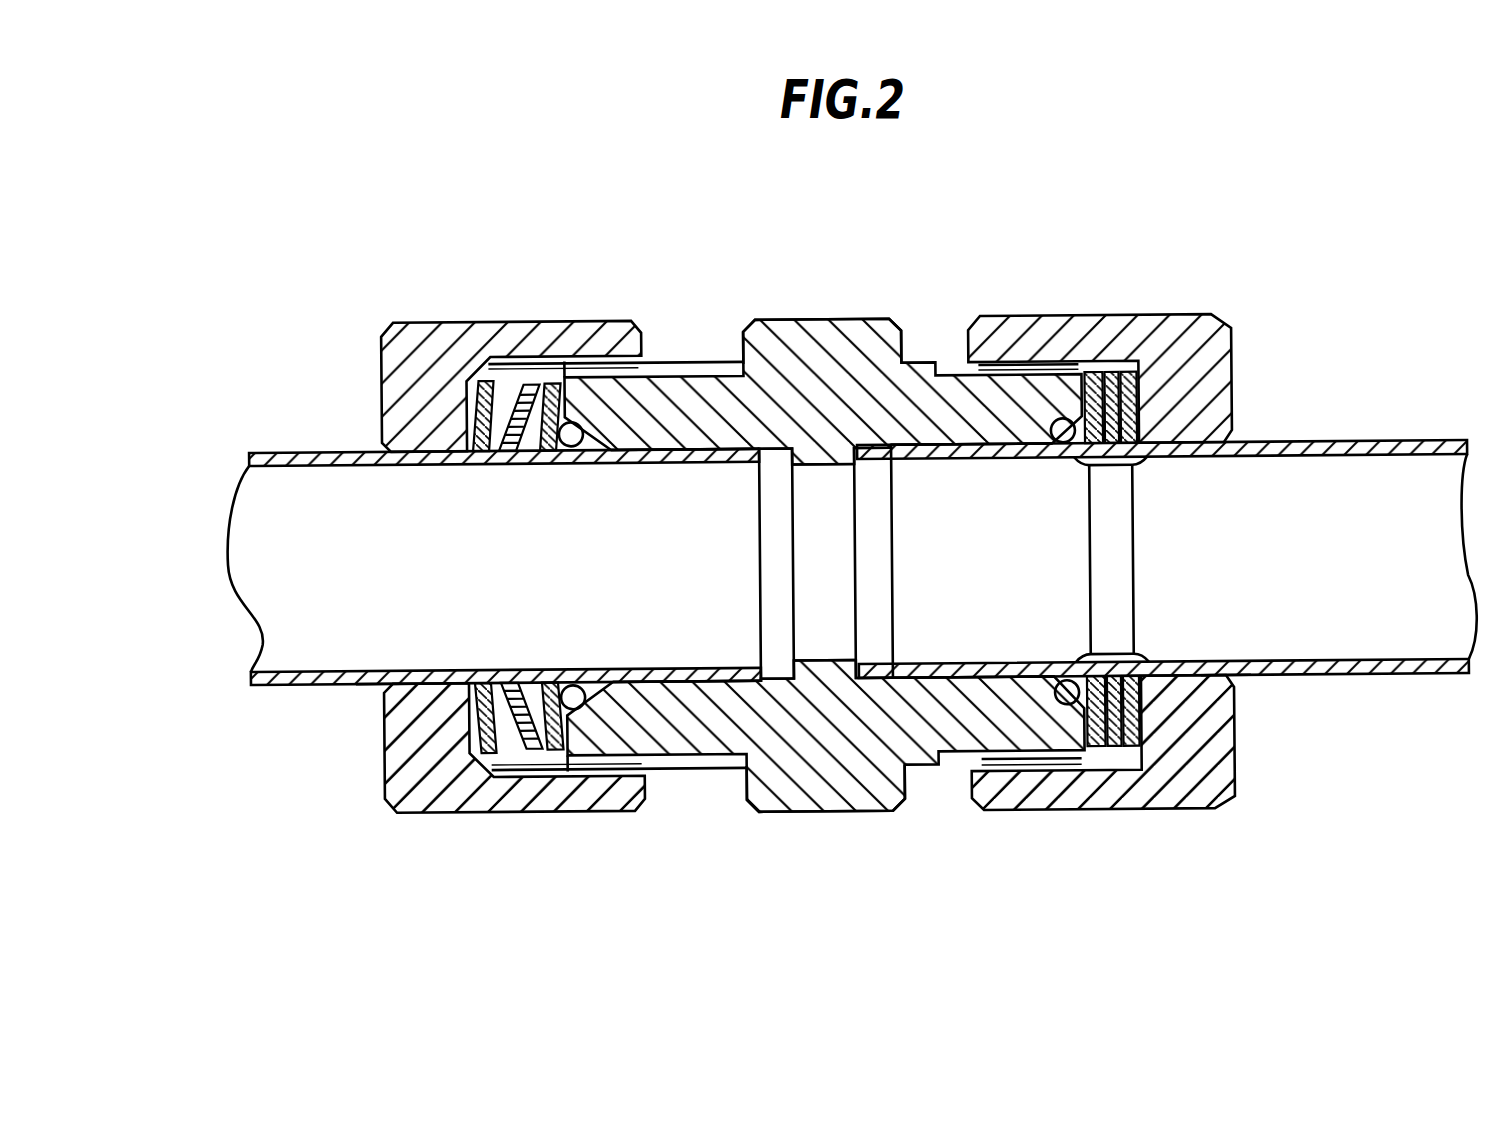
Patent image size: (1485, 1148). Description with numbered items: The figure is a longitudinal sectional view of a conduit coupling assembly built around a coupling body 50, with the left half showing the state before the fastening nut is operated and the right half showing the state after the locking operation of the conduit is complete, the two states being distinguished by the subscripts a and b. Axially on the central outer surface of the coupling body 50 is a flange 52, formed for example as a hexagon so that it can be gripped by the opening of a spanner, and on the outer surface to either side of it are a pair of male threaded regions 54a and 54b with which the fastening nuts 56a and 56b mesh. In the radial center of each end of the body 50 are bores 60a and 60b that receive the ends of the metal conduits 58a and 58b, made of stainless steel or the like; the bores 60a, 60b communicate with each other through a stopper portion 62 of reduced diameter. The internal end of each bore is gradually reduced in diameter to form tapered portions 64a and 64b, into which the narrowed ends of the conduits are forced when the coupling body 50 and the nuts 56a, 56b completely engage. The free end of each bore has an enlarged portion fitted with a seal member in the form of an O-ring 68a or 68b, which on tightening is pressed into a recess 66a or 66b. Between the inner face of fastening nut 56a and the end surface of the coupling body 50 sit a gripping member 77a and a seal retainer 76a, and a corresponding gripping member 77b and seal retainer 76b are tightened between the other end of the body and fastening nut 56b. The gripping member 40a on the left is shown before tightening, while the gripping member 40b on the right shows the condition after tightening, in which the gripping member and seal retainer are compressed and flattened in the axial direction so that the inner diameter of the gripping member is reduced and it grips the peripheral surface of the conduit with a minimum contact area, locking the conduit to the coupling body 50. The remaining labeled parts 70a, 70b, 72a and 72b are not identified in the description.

The gripping member 40a is at (521, 740).
The gripping member 40b is at (1100, 380).
The coupling body 50 is at (900, 332).
The flange 52 is at (808, 320).
The male threaded region 54a is at (700, 362).
The male threaded region 54b is at (942, 375).
The fastening nut 56a is at (430, 322).
The fastening nut 56b is at (1165, 318).
The metal conduit 58a is at (270, 452).
The metal conduit 58b is at (1355, 442).
The bore 60a is at (672, 462).
The bore 60b is at (990, 460).
The stopper portion 62 is at (807, 535).
The tapered portion 64a is at (780, 676).
The tapered portion 64b is at (873, 462).
The recess 66a is at (600, 695).
The recess 66b is at (1065, 685).
The O-ring 68a is at (572, 448).
The O-ring 68b is at (1080, 458).
The first nut flange 70a is at (400, 792).
The second nut flange 70b is at (1225, 732).
The first pipe end portion 72a is at (372, 683).
The second pipe end portion 72b is at (1218, 672).
The seal retainer 76a is at (553, 385).
The seal retainer 76b is at (1097, 755).
The gripping member 77a is at (478, 393).
The gripping member 77b is at (1140, 750).